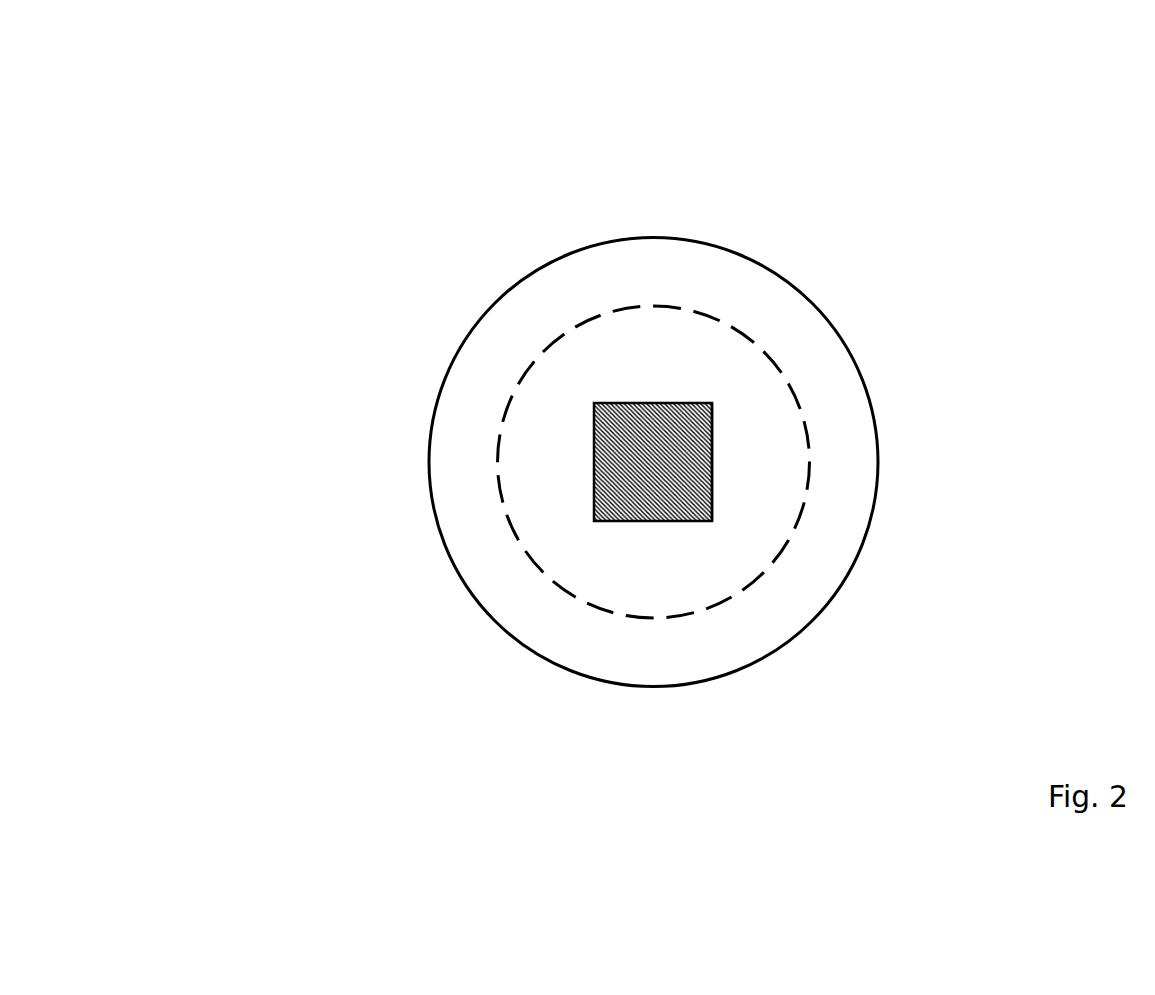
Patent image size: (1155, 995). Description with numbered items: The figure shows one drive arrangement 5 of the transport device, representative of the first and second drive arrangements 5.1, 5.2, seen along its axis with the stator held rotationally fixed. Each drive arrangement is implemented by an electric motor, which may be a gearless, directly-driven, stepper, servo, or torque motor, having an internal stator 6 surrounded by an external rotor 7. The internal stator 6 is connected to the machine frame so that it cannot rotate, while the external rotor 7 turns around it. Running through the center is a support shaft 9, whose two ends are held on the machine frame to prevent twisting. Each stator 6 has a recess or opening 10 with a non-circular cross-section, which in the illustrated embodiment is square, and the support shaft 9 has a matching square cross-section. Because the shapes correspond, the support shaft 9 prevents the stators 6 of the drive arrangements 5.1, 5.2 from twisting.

The drive arrangement 5 is at (727, 425).
The first drive arrangement 5.1 is at (615, 507).
The second drive arrangement 5.2 is at (615, 507).
The internal stator 6 is at (595, 568).
The external rotor 7 is at (512, 321).
The support shaft 9 is at (628, 461).
The opening 10 is at (712, 461).